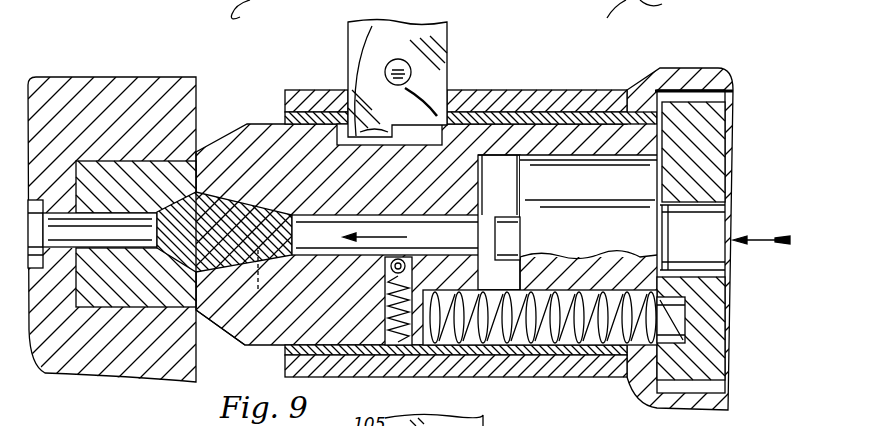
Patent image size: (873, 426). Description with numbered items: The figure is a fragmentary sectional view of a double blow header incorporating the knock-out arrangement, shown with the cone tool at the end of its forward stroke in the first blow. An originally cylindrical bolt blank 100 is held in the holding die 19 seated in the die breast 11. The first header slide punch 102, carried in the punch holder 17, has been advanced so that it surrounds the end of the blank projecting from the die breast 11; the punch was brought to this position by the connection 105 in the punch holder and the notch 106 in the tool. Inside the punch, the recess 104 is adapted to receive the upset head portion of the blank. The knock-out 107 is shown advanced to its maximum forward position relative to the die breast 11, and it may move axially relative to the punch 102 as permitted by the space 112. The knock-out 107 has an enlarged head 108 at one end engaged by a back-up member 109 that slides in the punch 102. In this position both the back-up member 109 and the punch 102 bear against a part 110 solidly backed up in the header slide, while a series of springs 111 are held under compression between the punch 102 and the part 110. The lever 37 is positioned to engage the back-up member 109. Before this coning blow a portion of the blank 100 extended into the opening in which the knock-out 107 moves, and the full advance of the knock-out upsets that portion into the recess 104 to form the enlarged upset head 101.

The die breast 11 is at (116, 350).
The holding die 19 is at (146, 290).
The lever 37 is at (725, 237).
The punch holder 17 is at (305, 97).
The bolt blank 100 is at (171, 204).
The enlarged upset head 101 is at (240, 250).
The first header slide punch 102 is at (257, 137).
The recess 104 is at (233, 206).
The connection 105 is at (397, 69).
The notch 106 is at (410, 133).
The knock-out 107 is at (340, 248).
The enlarged head 108 is at (507, 229).
The back-up member 109 is at (597, 207).
The part 110 is at (712, 165).
The springs 111 is at (543, 337).
The space 112 is at (498, 173).